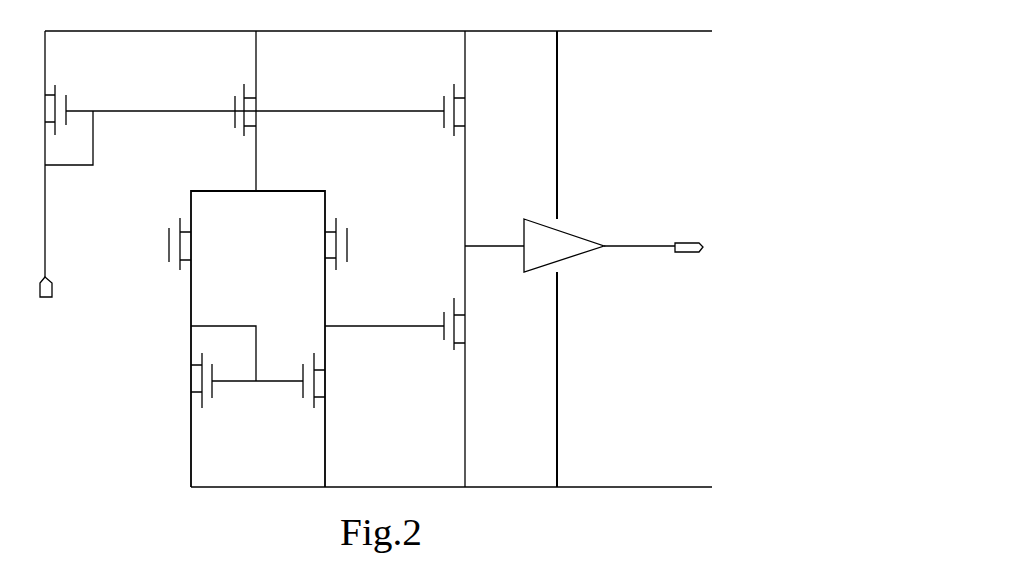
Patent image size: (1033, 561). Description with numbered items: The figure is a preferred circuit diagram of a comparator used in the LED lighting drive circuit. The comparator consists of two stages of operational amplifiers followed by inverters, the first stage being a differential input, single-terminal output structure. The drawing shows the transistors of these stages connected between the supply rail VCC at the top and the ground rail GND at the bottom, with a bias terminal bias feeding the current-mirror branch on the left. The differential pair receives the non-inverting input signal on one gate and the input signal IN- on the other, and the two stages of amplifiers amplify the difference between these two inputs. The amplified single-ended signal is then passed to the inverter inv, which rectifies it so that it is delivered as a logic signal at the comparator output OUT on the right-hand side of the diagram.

The supply voltage rail VCC is at (378, 21).
The ground rail GND is at (451, 476).
The bias input bias is at (227, 169).
The input signal IN− IN- is at (390, 247).
The inverter inv is at (534, 245).
The comparator output OUT is at (654, 237).